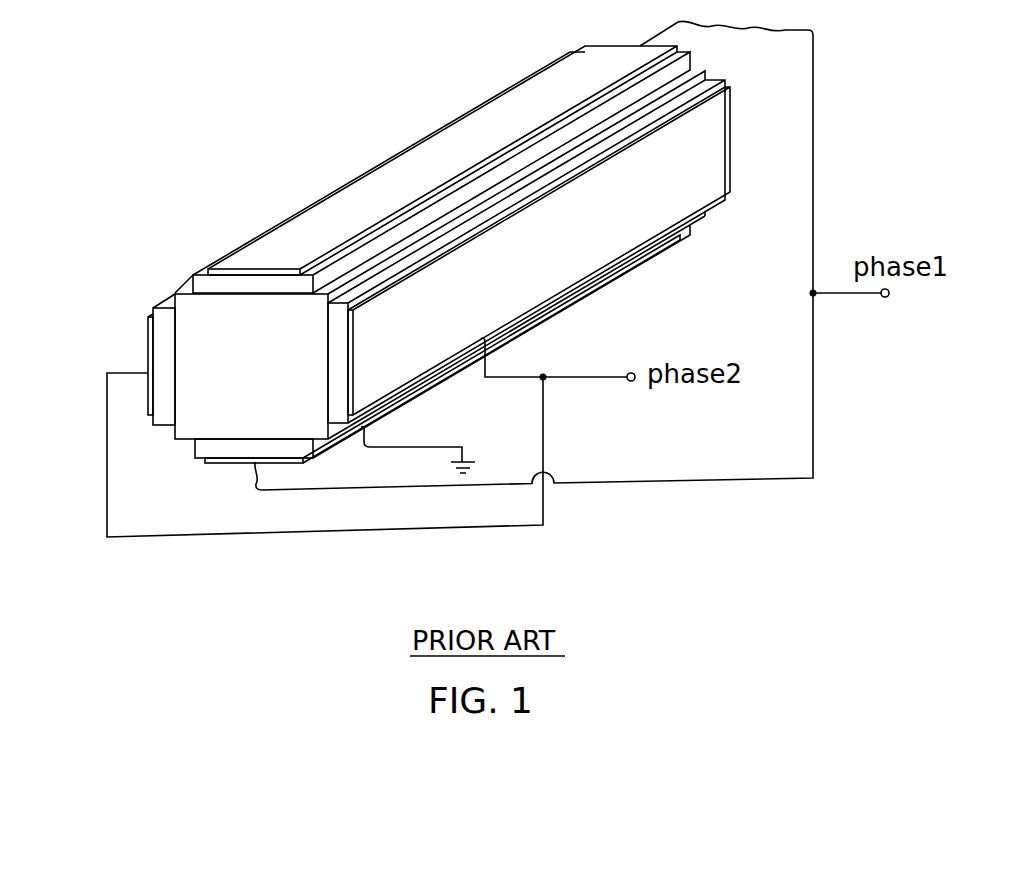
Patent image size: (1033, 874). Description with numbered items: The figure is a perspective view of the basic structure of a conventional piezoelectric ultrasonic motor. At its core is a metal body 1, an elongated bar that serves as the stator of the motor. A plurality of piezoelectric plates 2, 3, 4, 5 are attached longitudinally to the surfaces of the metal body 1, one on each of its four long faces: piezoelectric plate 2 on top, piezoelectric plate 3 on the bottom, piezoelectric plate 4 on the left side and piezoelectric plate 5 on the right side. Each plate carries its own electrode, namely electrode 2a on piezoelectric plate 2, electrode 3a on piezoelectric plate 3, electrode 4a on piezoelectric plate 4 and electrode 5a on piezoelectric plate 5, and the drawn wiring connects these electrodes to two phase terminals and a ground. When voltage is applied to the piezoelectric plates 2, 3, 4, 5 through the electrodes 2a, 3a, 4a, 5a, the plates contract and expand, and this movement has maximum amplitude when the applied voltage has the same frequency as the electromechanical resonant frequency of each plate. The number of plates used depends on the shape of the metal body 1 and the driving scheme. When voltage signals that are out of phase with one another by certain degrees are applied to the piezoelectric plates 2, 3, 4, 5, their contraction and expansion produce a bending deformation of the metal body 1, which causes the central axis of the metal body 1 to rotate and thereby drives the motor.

The metal body 1 is at (210, 325).
The piezoelectric plate 2 is at (245, 287).
The electrode 2a is at (422, 160).
The piezoelectric plate 3 is at (207, 449).
The electrode 3a is at (235, 462).
The piezoelectric plate 4 is at (165, 332).
The electrode 4a is at (148, 356).
The piezoelectric plate 5 is at (722, 200).
The electrode 5a is at (727, 145).